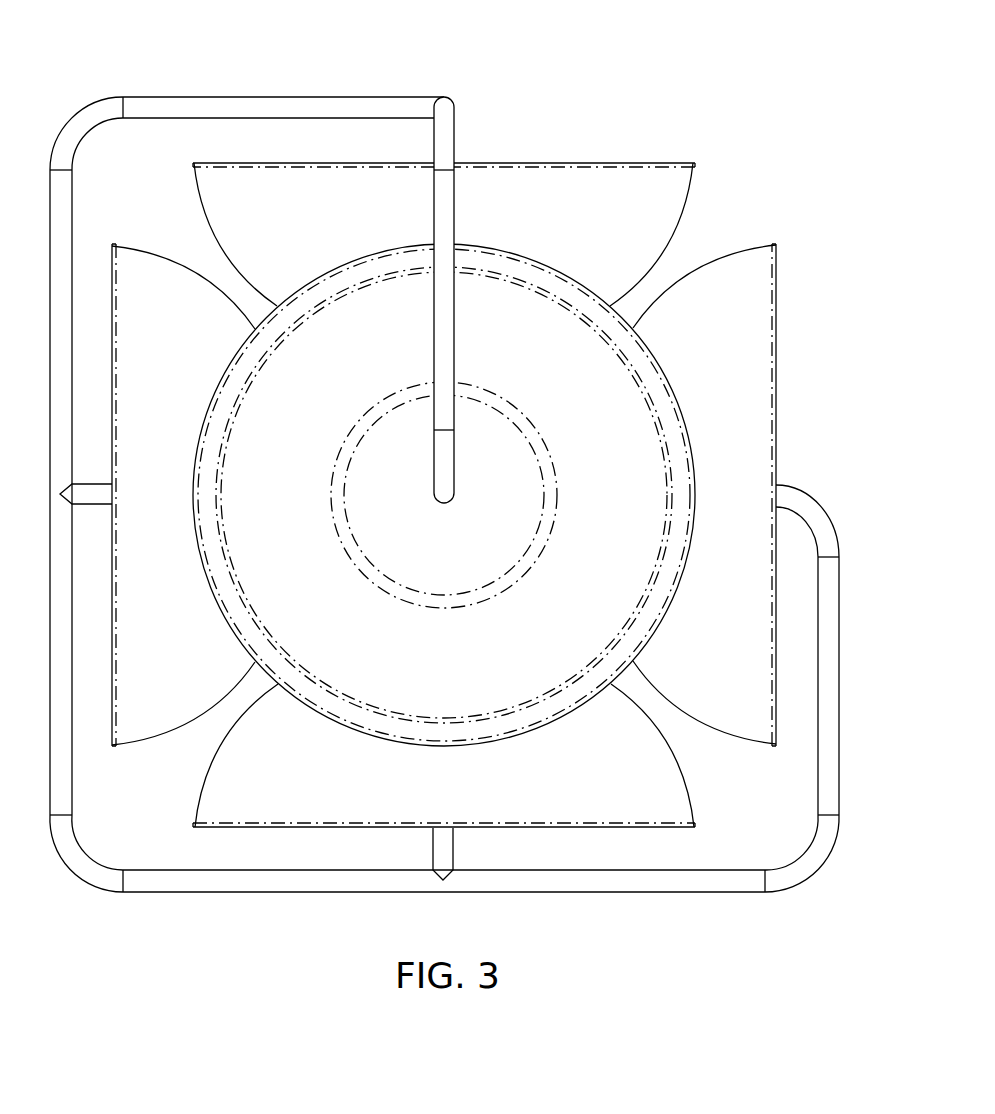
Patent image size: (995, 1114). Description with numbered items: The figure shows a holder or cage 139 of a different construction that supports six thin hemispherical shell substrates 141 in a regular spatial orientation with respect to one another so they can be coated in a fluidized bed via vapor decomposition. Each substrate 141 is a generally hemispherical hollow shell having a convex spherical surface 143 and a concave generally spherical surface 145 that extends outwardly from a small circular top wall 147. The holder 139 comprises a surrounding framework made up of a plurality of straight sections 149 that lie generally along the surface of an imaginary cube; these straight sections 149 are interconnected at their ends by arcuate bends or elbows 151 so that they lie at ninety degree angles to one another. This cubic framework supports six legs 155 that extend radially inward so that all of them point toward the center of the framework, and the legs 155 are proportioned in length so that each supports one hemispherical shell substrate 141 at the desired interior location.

The holder 139 is at (444, 495).
The substrate 141 is at (457, 495).
The convex spherical surface 143 is at (566, 213).
The concave generally spherical surface 145 is at (334, 391).
The top wall 147 is at (514, 531).
The straight section 149 is at (205, 108).
The elbow 151 is at (73, 128).
The leg 155 is at (90, 493).